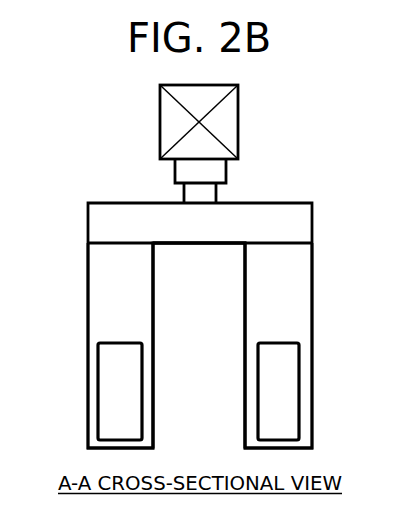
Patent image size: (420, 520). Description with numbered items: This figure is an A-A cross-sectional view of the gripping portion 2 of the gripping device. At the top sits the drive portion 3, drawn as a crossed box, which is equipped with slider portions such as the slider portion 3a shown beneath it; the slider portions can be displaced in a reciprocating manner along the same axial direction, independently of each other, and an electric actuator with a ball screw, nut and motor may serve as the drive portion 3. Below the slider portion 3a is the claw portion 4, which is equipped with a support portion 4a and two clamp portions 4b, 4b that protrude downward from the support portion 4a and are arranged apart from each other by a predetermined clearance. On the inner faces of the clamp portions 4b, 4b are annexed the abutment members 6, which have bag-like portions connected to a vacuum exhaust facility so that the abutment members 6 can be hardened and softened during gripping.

The gripping portion 2 is at (95, 104).
The drive portion 3 is at (253, 115).
The slider portion 3a is at (226, 168).
The claw portion 4 is at (324, 261).
The support portion 4a is at (200, 245).
The clamp portion 4b is at (87, 294).
The abutment member 6 is at (132, 395).